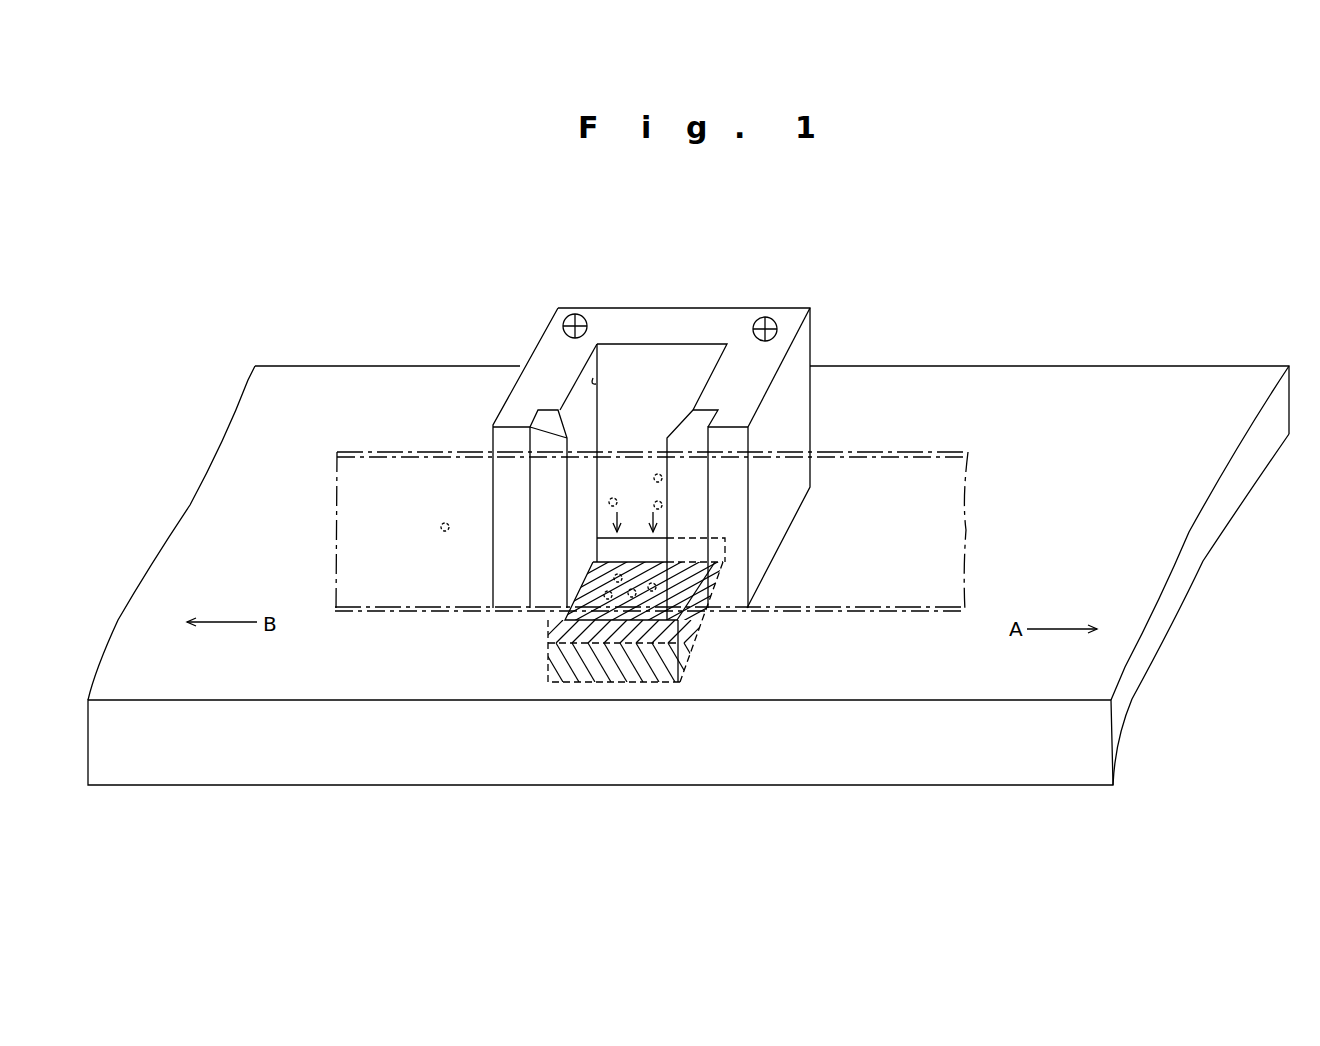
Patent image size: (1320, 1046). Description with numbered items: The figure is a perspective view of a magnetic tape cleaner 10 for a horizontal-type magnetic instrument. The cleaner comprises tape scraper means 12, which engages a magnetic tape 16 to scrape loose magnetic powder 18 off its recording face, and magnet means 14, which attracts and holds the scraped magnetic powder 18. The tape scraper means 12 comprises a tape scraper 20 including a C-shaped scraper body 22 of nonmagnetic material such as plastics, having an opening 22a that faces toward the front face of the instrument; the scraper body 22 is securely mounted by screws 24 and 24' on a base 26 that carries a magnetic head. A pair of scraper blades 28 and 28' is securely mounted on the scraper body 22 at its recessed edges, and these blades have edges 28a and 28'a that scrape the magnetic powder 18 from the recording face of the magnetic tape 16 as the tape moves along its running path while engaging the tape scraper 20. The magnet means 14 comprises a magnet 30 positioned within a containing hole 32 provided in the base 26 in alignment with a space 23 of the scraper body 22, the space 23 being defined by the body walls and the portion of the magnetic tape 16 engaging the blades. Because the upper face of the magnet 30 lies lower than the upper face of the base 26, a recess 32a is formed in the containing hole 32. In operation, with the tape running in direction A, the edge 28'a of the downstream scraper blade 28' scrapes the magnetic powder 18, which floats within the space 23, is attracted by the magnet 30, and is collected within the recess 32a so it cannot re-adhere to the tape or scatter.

The magnetic tape cleaner 10 is at (669, 414).
The tape scraper means 12 is at (755, 302).
The magnet means 14 is at (528, 633).
The magnetic tape 16 is at (358, 517).
The magnetic powder 18 is at (680, 677).
The tape scraper 20 is at (767, 432).
The scraper body 22 is at (690, 338).
The opening 22a is at (623, 440).
The space 23 is at (593, 380).
The screw 24 is at (579, 296).
The screw 24' is at (819, 309).
The base 26 is at (321, 388).
The scraper blade 28 is at (518, 451).
The scraper blade 28' is at (790, 470).
The edge 28a is at (565, 538).
The edge 28'a is at (774, 523).
The magnet 30 is at (611, 686).
The containing hole 32 is at (629, 665).
The recess 32a is at (556, 625).